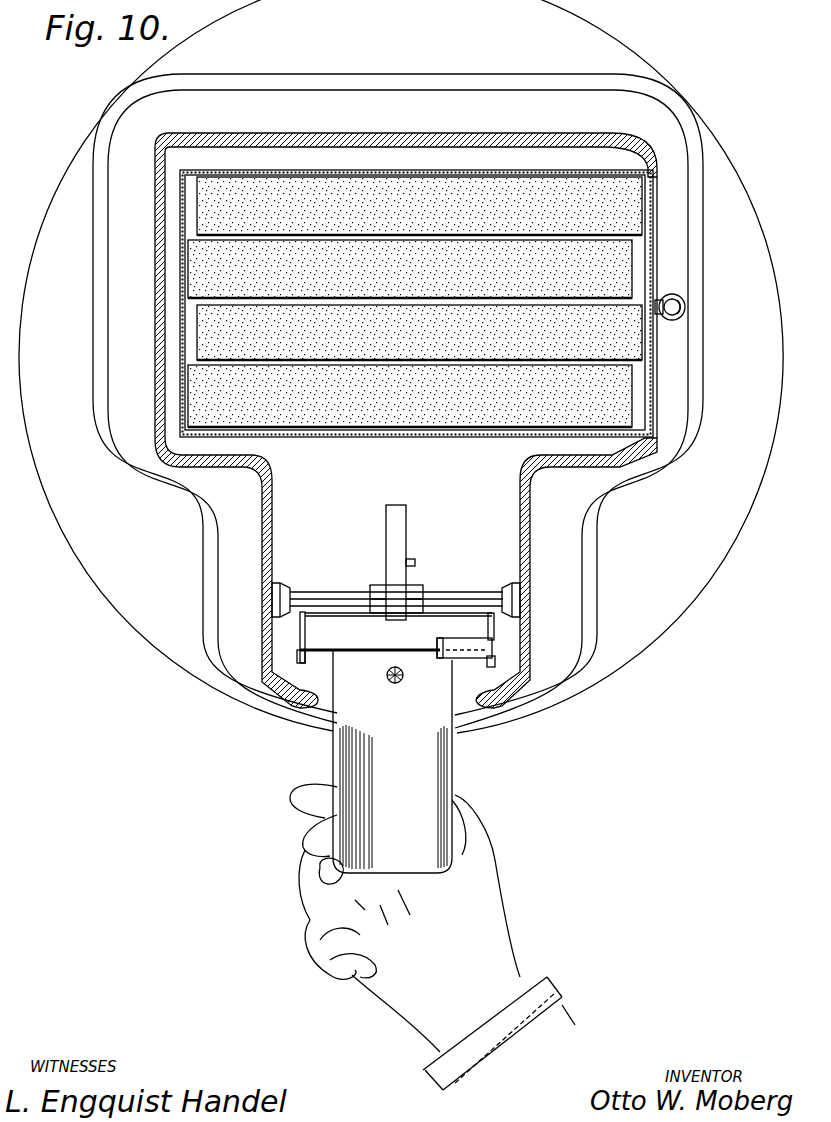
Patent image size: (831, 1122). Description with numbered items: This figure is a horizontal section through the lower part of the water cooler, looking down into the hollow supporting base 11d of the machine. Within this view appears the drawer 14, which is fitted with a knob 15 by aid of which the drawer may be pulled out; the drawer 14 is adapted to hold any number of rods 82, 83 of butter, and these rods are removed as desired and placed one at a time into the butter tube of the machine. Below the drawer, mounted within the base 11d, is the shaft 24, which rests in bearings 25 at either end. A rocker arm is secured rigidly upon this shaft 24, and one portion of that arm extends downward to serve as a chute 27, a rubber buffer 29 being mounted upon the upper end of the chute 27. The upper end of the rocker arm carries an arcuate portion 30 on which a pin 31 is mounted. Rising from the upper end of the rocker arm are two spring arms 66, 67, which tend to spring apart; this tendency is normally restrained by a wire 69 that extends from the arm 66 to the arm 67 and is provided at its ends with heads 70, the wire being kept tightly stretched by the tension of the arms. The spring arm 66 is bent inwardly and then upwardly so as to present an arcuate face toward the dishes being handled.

The supporting base 11d is at (707, 553).
The drawer 14 is at (648, 390).
The knob 15 is at (685, 303).
The rod of butter 82 is at (416, 186).
The rod of butter 83 is at (483, 408).
The arcuate portion 30 is at (403, 518).
The pin 31 is at (416, 563).
The shaft 24 is at (334, 597).
The bearings 25 is at (510, 583).
The spring arm 67 is at (306, 627).
The spring arm 66 is at (488, 627).
The wire 69 is at (364, 652).
The heads 70 is at (505, 668).
The rubber buffer 29 is at (395, 684).
The chute 27 is at (430, 767).